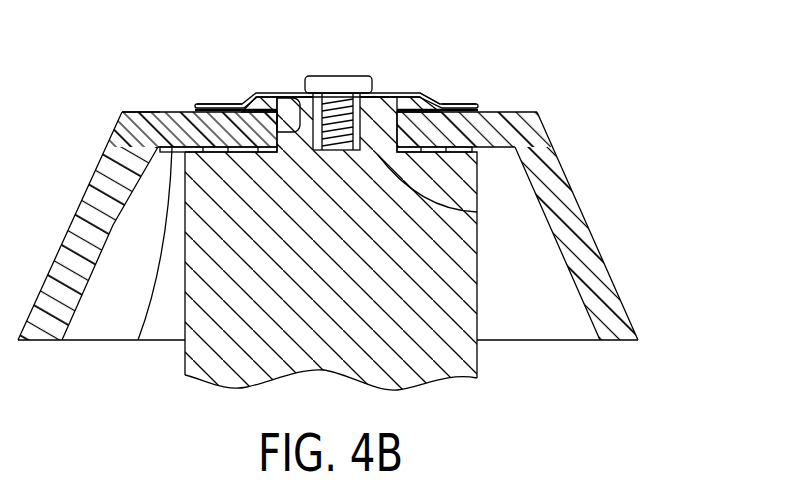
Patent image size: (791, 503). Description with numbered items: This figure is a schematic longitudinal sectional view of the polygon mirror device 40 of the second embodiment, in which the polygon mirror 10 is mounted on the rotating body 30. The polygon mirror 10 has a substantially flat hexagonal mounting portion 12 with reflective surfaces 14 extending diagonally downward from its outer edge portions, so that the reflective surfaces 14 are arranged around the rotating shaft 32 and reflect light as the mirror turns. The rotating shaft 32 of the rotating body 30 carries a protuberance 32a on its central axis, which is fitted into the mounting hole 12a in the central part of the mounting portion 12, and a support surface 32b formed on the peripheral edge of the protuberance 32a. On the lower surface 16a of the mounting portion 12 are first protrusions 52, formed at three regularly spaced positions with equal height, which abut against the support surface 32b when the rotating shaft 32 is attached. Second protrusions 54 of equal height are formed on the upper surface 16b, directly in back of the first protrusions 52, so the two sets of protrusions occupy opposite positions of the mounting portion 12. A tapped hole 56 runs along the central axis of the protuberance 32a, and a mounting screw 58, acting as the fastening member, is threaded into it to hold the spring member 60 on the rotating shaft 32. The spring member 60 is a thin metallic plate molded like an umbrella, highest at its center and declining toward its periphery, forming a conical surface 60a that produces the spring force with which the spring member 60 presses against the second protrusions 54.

The polygon mirror 10 is at (600, 221).
The mounting portion 12 is at (504, 112).
The mounting hole 12a is at (297, 125).
The reflective surfaces 14 is at (100, 181).
The lower surface 16a is at (138, 340).
The upper surface 16b is at (152, 112).
The rotating body 30 is at (490, 325).
The rotating shaft 32 is at (468, 300).
The protuberance 32a is at (382, 117).
The support surface 32b is at (199, 105).
The polygon mirror device 40 is at (550, 96).
The first protrusions 52 is at (228, 109).
The second protrusions 54 is at (473, 104).
The tapped hole 56 is at (472, 212).
The mounting screw 58 is at (338, 76).
The spring member 60 is at (262, 95).
The conical surface 60a is at (421, 93).